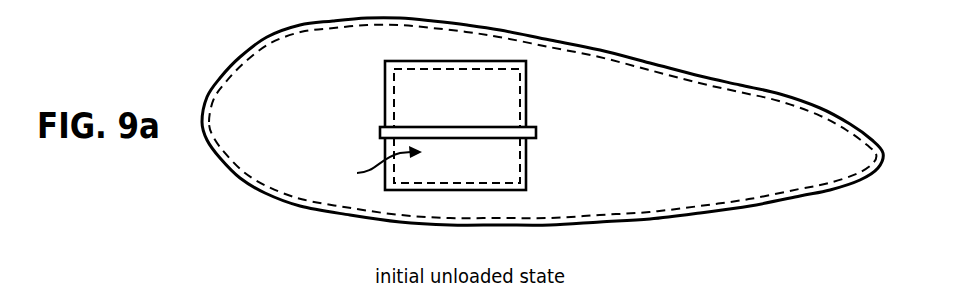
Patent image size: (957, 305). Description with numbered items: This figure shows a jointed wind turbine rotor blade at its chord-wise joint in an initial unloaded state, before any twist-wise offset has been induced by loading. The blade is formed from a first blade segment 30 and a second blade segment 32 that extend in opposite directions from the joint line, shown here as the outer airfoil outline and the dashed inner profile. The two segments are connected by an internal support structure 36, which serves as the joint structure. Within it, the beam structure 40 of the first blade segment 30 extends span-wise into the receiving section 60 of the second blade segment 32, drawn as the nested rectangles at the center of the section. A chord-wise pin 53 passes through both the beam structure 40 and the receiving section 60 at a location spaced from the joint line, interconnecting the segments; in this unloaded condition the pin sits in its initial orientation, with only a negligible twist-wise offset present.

The first blade segment 30 is at (614, 56).
The second blade segment 32 is at (247, 190).
The internal support structure 36 is at (377, 166).
The beam structure 40 is at (393, 97).
The chord-wise pin 53 is at (537, 134).
The receiving section 60 is at (527, 168).